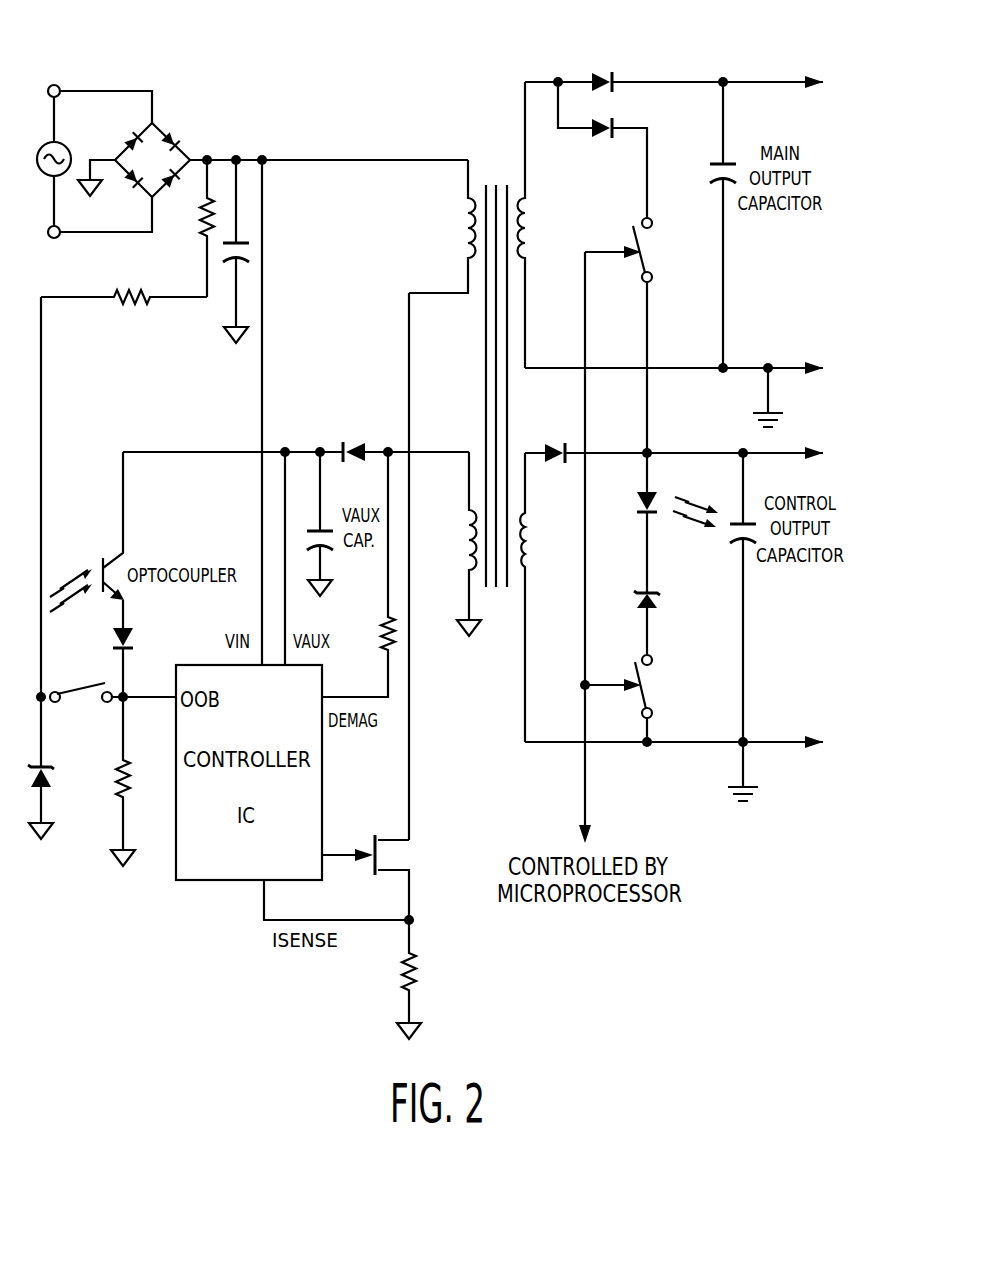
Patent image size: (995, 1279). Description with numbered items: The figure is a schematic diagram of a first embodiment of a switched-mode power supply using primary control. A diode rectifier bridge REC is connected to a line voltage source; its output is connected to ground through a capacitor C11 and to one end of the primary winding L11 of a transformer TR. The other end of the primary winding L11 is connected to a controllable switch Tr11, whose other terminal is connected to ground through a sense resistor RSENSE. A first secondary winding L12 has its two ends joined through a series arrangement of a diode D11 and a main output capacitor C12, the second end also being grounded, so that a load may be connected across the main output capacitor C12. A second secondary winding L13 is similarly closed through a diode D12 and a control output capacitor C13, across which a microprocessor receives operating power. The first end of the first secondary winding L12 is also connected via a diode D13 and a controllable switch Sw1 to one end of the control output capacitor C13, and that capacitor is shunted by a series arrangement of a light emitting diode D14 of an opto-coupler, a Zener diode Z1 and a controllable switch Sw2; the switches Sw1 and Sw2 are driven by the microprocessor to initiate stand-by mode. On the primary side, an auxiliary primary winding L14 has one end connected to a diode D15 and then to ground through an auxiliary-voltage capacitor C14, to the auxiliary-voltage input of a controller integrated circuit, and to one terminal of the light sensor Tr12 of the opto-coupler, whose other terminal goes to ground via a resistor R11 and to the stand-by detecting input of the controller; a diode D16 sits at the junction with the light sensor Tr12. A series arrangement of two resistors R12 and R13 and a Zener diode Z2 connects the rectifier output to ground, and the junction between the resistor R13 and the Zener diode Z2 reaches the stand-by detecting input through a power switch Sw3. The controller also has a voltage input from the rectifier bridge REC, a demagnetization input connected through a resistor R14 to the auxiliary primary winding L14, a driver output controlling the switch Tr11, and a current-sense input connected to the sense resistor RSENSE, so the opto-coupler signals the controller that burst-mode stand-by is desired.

The diode rectifier bridge REC is at (173, 143).
The resistor R12 is at (195, 223).
The resistor R13 is at (128, 287).
The capacitor C11 is at (223, 263).
The transformer TR is at (496, 412).
The primary winding L11 is at (468, 225).
The first secondary winding L12 is at (523, 218).
The second secondary winding L13 is at (530, 547).
The auxiliary primary winding L14 is at (470, 558).
The diode D11 is at (608, 75).
The diode D13 is at (597, 138).
The main output capacitor C12 is at (708, 165).
The controllable switch Sw1 is at (638, 250).
The diode D12 is at (552, 440).
The light emitting diode D14 is at (635, 497).
The control output capacitor C13 is at (727, 533).
The Zener diode Z1 is at (635, 602).
The controllable switch Sw2 is at (637, 686).
The diode D15 is at (353, 442).
The VAUX capacitor C14 is at (327, 550).
The resistor R14 is at (380, 637).
The light sensor Tr12 is at (102, 560).
The diode D16 is at (112, 642).
The power switch Sw3 is at (81, 708).
The Zener diode Z2 is at (55, 780).
The resistor R11 is at (142, 770).
The controllable switch Tr11 is at (393, 857).
The sense resistor RSENSE is at (447, 979).